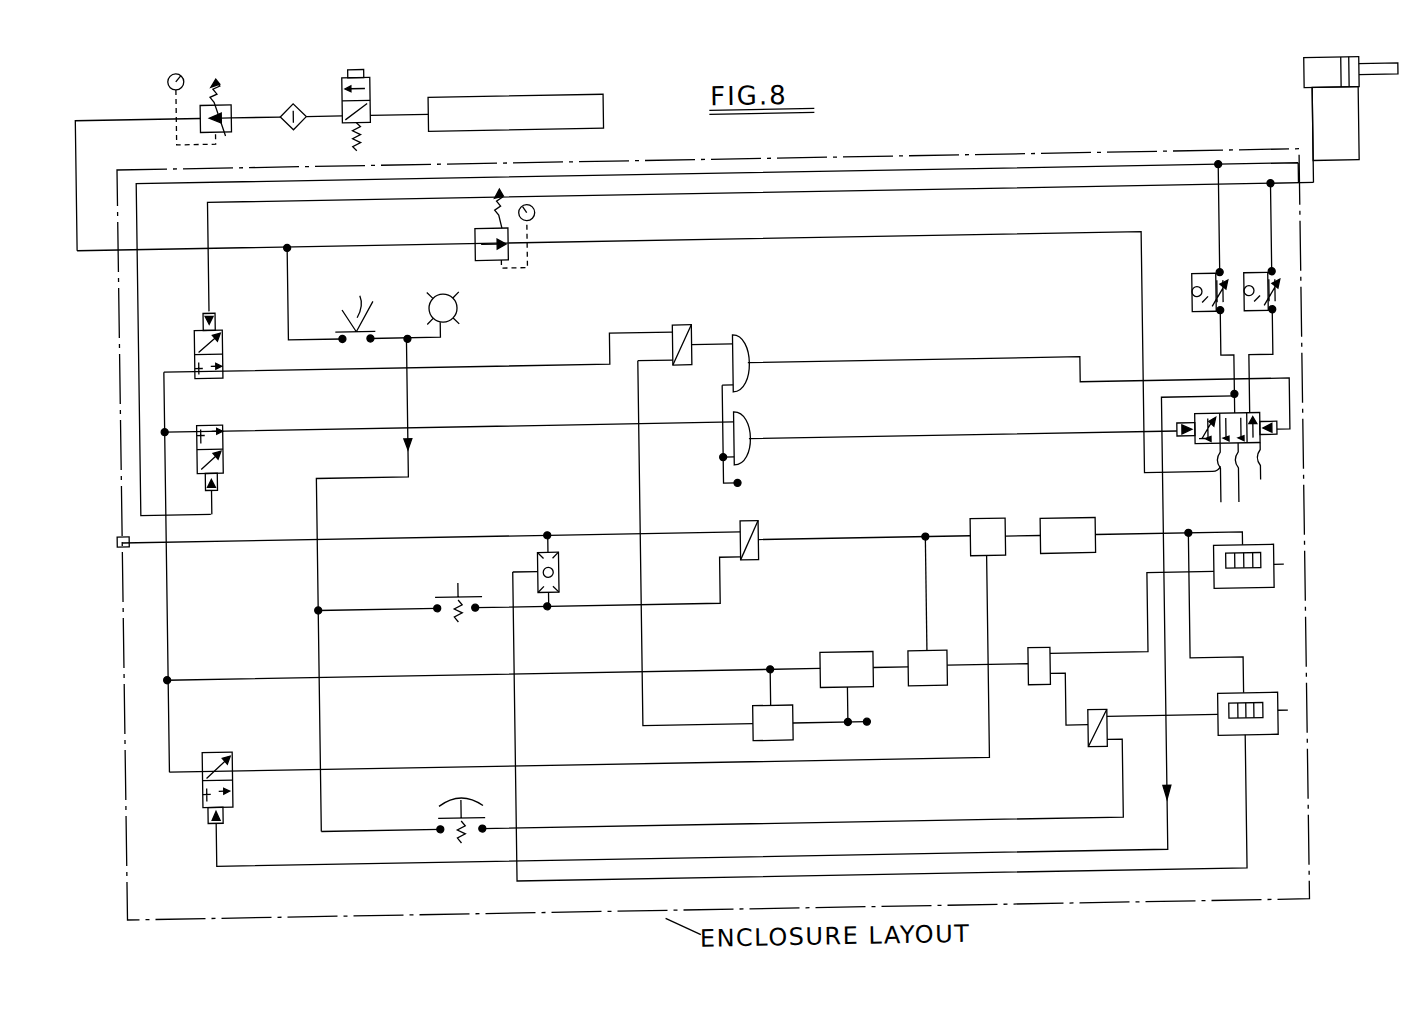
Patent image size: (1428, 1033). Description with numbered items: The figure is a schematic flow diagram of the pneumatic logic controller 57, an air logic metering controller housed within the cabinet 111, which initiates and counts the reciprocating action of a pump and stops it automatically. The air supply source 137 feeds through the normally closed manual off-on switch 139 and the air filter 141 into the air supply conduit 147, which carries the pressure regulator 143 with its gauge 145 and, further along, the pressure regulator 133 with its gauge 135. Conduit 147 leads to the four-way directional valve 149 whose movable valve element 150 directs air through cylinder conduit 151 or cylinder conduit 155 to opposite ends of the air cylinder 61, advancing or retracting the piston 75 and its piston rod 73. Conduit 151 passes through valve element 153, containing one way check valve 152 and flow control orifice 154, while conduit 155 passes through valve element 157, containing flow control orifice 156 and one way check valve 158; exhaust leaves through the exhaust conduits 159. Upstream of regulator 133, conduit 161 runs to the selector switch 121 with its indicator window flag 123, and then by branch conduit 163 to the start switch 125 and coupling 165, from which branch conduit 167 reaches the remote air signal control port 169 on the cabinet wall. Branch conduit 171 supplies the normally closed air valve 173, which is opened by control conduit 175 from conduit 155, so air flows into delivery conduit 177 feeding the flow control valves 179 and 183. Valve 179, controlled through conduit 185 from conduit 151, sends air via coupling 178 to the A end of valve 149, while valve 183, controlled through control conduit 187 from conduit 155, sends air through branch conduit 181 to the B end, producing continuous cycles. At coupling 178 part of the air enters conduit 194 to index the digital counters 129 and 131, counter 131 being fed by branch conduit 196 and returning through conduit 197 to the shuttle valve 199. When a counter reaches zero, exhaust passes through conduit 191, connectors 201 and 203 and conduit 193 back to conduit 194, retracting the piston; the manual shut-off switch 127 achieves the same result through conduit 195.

The pneumatic logic controller 57 is at (193, 854).
The air cylinder 61 is at (1331, 109).
The piston rod 73 is at (1387, 101).
The piston 75 is at (1307, 101).
The cabinet 111 is at (1100, 166).
The selector switch 121 is at (356, 298).
The indicator window flag 123 is at (455, 314).
The start switch 125 is at (426, 606).
The shut-off switch 127 is at (427, 835).
The digital counter 129 is at (1225, 608).
The digital counter 131 is at (1249, 758).
The pressure regulator 133 is at (474, 247).
The gauge 135 is at (535, 222).
The air supply source 137 is at (604, 121).
The manual off-on switch 139 is at (371, 93).
The air filter 141 is at (286, 129).
The pressure regulator 143 is at (232, 138).
The gauge 145 is at (169, 89).
The air supply conduit 147 is at (77, 151).
The four-way directional valve 149 is at (1262, 480).
The movable valve element 150 is at (1208, 430).
The cylinder conduit 151 is at (1313, 150).
The one way check valve 152 is at (1275, 306).
The valve element 153 is at (1254, 296).
The flow control orifice 154 is at (1274, 321).
The cylinder conduit 155 is at (1216, 219).
The flow control orifice 156 is at (1189, 300).
The valve element 157 is at (1204, 332).
The one way check valve 158 is at (1189, 322).
The exhaust conduits 159 is at (1213, 500).
The conduit 161 is at (286, 296).
The branch conduit 163 is at (382, 617).
The coupling 165 is at (758, 540).
The branch conduit 167 is at (478, 541).
The remote air signal control port 169 is at (124, 548).
The branch conduit 171 is at (981, 616).
The air valve 173 is at (217, 768).
The control conduit 175 is at (1155, 566).
The pressure air delivery conduit 177 is at (322, 374).
The coupling 178 is at (690, 343).
The flow control valve 179 is at (192, 352).
The branch conduit 181 is at (170, 424).
The flow control valve 183 is at (219, 452).
The conduit 185 is at (1054, 204).
The control conduit 187 is at (208, 517).
The conduit 191 is at (1180, 733).
The conduit 193 is at (668, 680).
The conduit 194 is at (667, 742).
The conduit 195 is at (999, 833).
The branch conduit 196 is at (1189, 656).
The conduit 197 is at (1238, 875).
The shuttle valve 199 is at (553, 583).
The connector 201 is at (1087, 728).
The connector 203 is at (1027, 667).